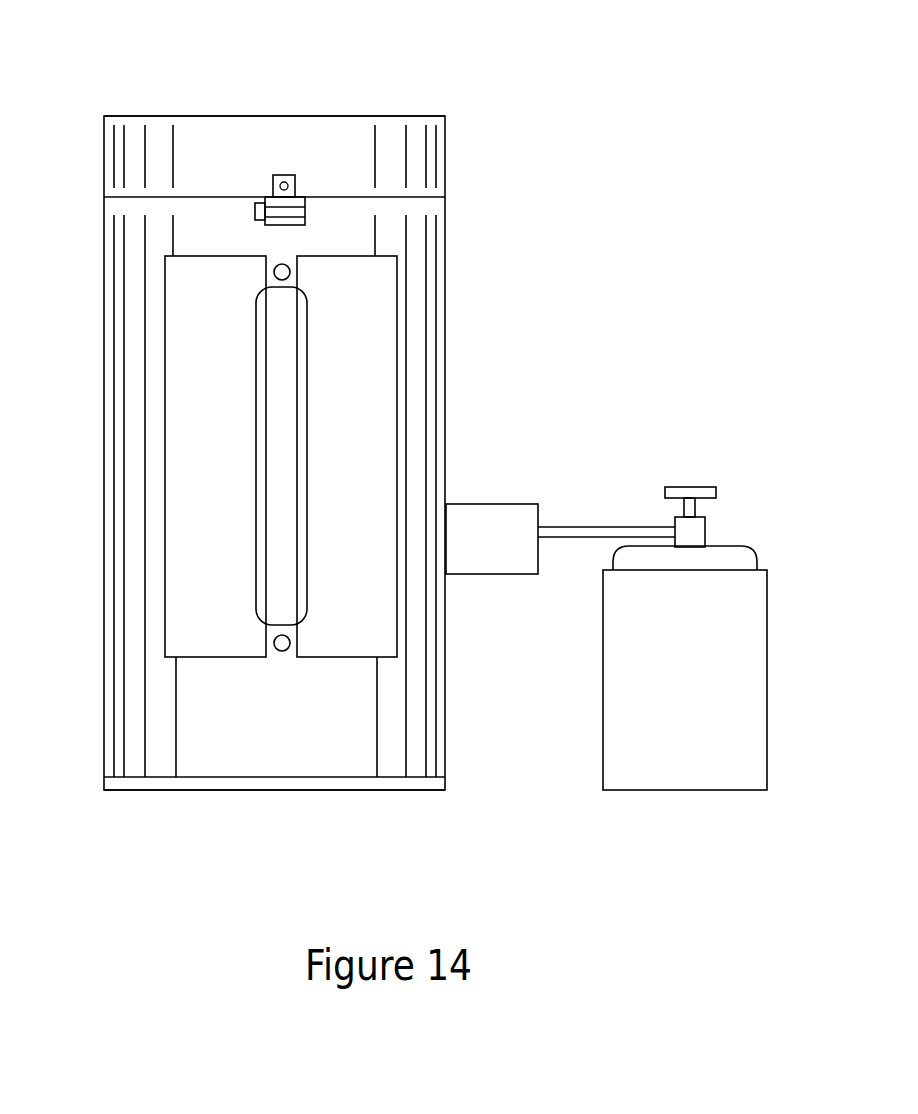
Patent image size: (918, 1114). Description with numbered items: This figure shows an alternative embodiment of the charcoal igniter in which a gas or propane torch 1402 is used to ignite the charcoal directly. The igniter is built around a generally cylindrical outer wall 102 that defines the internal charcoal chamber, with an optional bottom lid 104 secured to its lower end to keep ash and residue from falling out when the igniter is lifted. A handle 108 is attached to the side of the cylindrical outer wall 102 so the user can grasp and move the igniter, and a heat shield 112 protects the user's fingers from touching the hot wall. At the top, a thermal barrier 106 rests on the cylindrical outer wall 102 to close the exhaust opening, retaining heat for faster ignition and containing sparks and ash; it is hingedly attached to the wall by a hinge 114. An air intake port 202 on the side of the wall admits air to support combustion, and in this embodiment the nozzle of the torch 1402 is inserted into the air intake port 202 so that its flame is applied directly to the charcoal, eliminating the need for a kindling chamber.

The cylindrical outer wall 102 is at (113, 468).
The bottom lid 104 is at (337, 790).
The thermal barrier 106 is at (225, 137).
The handle 108 is at (275, 447).
The heat shield 112 is at (367, 623).
The hinge 114 is at (286, 178).
The air intake port 202 is at (467, 525).
The propane torch 1402 is at (624, 628).